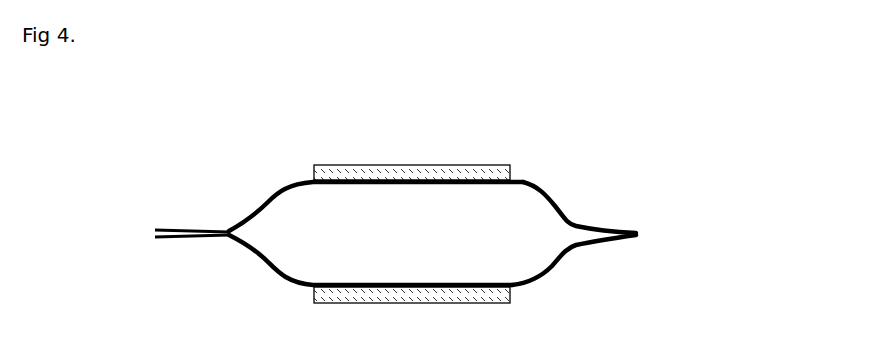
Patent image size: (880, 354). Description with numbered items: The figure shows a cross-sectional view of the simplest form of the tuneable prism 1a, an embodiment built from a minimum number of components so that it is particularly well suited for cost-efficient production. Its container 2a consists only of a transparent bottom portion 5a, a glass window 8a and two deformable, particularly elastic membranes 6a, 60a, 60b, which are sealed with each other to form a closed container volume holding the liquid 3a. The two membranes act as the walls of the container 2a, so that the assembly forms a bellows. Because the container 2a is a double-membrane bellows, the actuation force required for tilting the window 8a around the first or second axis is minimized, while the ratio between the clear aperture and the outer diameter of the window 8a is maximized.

The tuneable prism 1a is at (263, 150).
The container 2a is at (295, 220).
The liquid 3a is at (327, 260).
The transparent bottom portion 5a is at (466, 295).
The deformable elastic membranes 6a is at (624, 224).
The first membrane 60a is at (571, 202).
The second membrane 60b is at (556, 267).
The glass window 8a is at (426, 177).